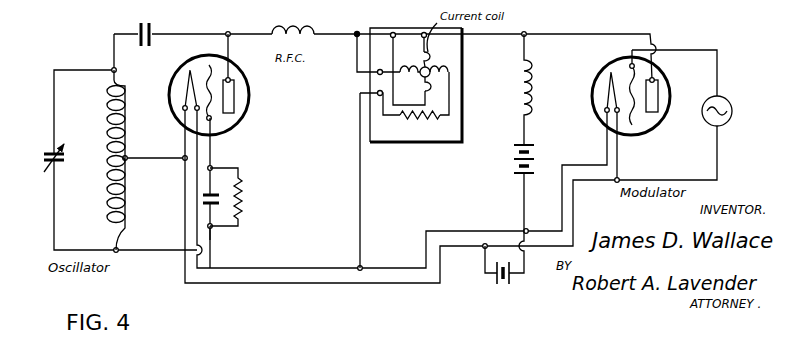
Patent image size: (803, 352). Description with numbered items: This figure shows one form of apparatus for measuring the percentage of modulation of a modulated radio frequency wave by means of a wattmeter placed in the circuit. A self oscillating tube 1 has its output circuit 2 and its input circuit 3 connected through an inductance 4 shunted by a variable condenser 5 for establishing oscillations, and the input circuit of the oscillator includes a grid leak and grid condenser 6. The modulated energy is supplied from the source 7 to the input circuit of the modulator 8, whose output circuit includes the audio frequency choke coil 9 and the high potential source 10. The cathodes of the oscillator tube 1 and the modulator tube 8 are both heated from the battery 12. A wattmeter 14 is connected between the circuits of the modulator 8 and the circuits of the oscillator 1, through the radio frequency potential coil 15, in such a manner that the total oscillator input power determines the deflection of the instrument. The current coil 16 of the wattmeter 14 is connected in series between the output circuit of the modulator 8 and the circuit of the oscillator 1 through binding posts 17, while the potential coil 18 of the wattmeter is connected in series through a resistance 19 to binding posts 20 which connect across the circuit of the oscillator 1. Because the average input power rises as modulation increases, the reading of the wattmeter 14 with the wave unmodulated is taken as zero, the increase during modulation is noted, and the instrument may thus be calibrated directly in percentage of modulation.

The self oscillating tube 1 is at (252, 101).
The output circuit 2 is at (144, 46).
The input circuit 3 is at (208, 237).
The inductance 4 is at (126, 196).
The variable condenser 5 is at (46, 159).
The grid leak and grid condenser 6 is at (222, 198).
The source 7 is at (729, 97).
The modulator 8 is at (667, 72).
The audio frequency choke coil 9 is at (540, 65).
The high potential source 10 is at (538, 158).
The battery 12 is at (494, 264).
The wattmeter 14 is at (413, 130).
The radio frequency potential coil 15 is at (270, 26).
The current coil 16 is at (434, 60).
The binding posts 17 is at (424, 32).
The potential coil 18 is at (405, 78).
The resistance 19 is at (400, 115).
The binding posts 20 is at (377, 72).